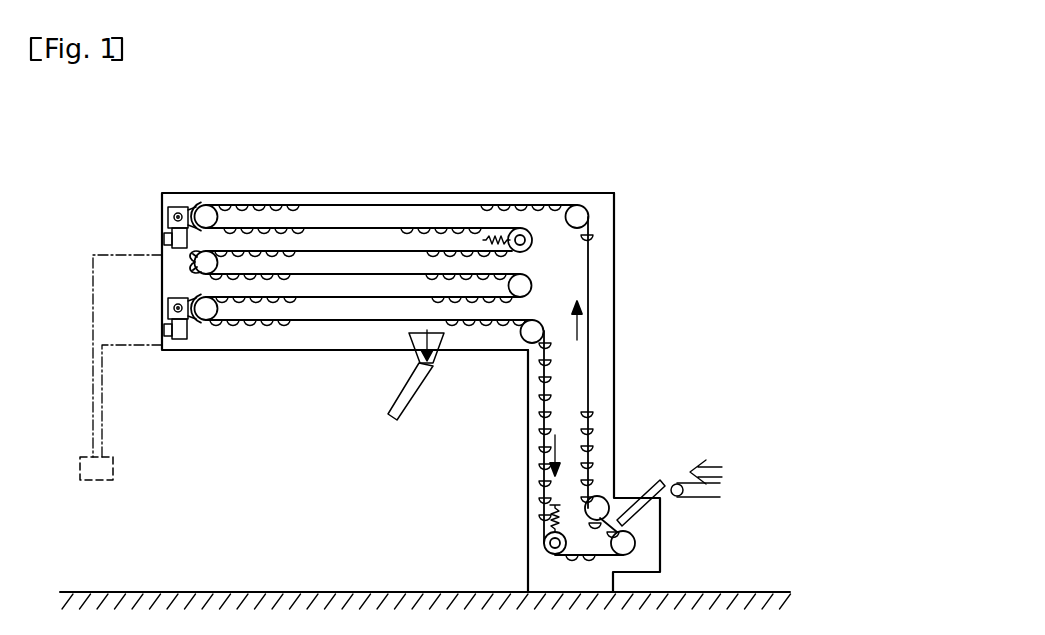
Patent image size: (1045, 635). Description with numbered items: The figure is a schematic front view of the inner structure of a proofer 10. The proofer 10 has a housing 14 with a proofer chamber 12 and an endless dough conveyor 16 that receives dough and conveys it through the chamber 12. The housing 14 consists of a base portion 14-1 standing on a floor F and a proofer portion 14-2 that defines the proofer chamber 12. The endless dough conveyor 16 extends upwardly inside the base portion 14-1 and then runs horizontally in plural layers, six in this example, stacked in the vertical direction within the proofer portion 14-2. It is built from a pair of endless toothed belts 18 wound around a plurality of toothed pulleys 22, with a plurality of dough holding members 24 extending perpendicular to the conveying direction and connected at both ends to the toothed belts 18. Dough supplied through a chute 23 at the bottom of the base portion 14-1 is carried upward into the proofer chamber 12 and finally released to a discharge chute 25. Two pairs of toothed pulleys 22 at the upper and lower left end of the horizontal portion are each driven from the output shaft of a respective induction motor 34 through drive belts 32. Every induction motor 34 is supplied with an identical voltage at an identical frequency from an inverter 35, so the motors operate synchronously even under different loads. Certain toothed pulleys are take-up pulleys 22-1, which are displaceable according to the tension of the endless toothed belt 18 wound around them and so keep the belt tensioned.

The proofer 10 is at (373, 162).
The proofer chamber 12 is at (573, 286).
The housing 14 is at (425, 392).
The base portion 14-1 is at (528, 463).
The proofer portion 14-2 is at (346, 352).
The endless dough conveyor 16 is at (593, 332).
The endless toothed belt 18 is at (589, 365).
The toothed pulley 22 is at (209, 204).
The take-up pulley 22-1 is at (525, 230).
The chute 23 is at (660, 483).
The dough holding member 24 is at (493, 210).
The discharge chute 25 is at (437, 363).
The drive belt 32 is at (170, 208).
The induction motor 34 is at (163, 228).
The inverter 35 is at (88, 482).
The floor F is at (712, 590).